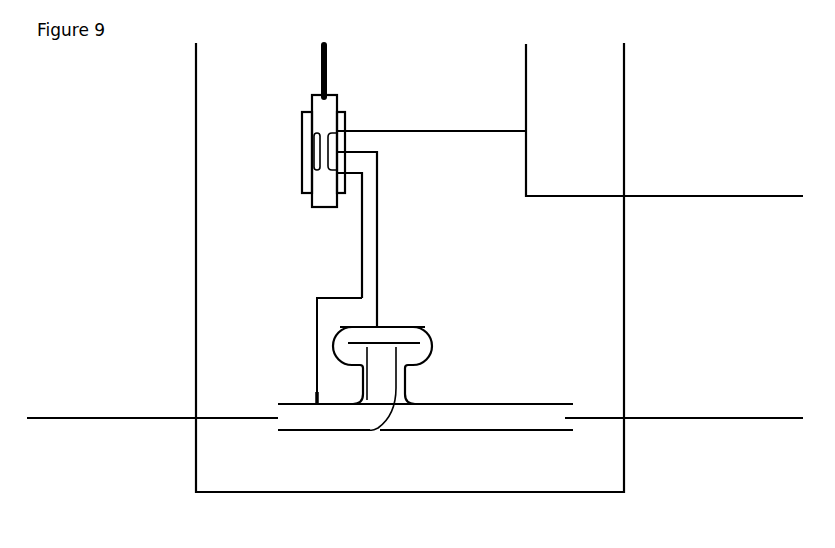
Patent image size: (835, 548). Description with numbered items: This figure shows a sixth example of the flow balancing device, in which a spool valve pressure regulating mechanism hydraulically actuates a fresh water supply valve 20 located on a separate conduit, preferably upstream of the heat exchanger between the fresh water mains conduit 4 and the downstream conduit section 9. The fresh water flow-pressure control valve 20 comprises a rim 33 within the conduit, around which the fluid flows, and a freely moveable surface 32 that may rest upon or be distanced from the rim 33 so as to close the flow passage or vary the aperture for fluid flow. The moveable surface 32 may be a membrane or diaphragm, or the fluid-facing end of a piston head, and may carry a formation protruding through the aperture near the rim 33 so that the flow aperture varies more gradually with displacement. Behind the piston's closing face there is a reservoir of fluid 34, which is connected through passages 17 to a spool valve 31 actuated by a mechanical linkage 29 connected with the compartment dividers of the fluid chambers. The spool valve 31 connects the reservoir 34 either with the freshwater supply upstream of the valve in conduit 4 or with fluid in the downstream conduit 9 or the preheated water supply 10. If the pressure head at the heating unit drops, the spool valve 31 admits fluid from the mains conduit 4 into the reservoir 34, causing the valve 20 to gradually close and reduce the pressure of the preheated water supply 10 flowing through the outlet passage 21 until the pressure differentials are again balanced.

The fresh water mains conduit 4 is at (55, 420).
The conduit section downstream of the valve 9 is at (713, 416).
The preheated water supply conduit 10 is at (747, 195).
The fluid channel 17 is at (422, 140).
The fresh water supply valve 20 is at (433, 333).
The outlet channel 21 is at (515, 433).
The mechanical linkage 29 is at (318, 72).
The spool valve 31 is at (303, 153).
The freely moveable surface 32 is at (383, 348).
The rim 33 is at (360, 348).
The reservoir of fluid 34 is at (404, 331).